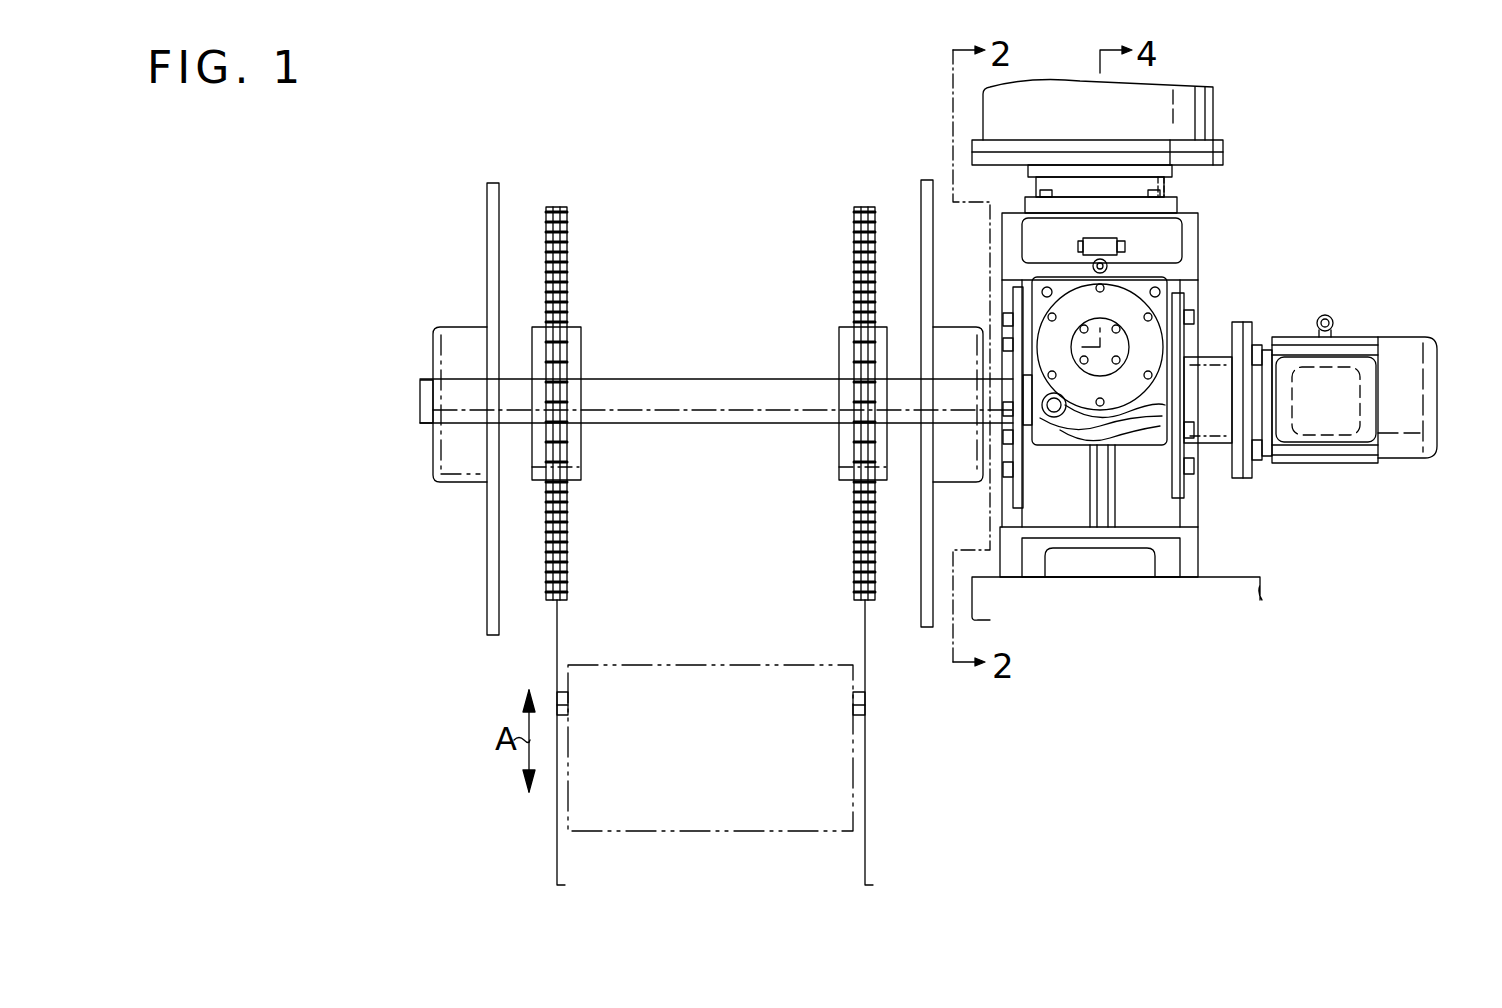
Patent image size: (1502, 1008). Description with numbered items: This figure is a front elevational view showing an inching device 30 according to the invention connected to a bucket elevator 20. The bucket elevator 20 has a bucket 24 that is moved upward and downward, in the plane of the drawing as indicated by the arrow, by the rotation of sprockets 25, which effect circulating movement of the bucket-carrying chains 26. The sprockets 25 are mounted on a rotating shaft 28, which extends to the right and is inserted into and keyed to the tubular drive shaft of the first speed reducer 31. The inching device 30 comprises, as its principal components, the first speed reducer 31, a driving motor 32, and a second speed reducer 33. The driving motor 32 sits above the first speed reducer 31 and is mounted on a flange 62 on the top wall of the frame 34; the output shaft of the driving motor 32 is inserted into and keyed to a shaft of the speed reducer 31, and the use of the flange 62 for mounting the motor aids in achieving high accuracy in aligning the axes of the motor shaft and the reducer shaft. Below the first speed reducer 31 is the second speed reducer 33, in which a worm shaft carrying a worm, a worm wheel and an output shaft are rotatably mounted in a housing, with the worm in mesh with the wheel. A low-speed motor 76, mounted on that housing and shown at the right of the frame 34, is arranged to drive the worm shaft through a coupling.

The bucket elevator 20 is at (476, 175).
The bucket 24 is at (718, 831).
The sprockets 25 is at (556, 205).
The bucket-carrying chains 26 is at (560, 632).
The rotating shaft 28 is at (721, 378).
The inching device 30 is at (1204, 334).
The first speed reducer 31 is at (1204, 216).
The driving motor 32 is at (1221, 92).
The second speed reducer 33 is at (1133, 447).
The frame 34 is at (1202, 265).
The flange 62 is at (1228, 157).
The low-speed motor 76 is at (1380, 330).